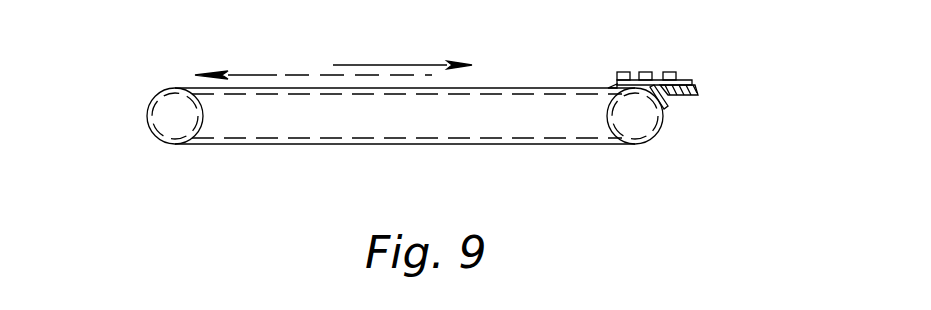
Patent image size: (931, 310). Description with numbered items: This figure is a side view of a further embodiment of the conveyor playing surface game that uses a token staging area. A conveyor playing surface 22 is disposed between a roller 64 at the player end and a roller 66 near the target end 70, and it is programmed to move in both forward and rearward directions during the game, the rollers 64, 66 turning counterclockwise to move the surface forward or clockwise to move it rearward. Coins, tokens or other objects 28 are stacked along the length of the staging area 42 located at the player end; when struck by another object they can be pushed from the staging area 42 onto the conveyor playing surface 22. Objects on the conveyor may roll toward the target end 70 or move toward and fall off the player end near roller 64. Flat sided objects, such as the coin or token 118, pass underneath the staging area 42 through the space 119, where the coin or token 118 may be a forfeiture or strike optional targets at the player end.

The conveyor playing surface 22 is at (508, 88).
The target end 70 is at (157, 90).
The roller 66 is at (176, 144).
The roller 64 is at (648, 137).
The staging area 42 is at (692, 73).
The coins, tokens or other objects 28 is at (670, 72).
The space 119 is at (613, 87).
The coin or token 118 is at (668, 108).